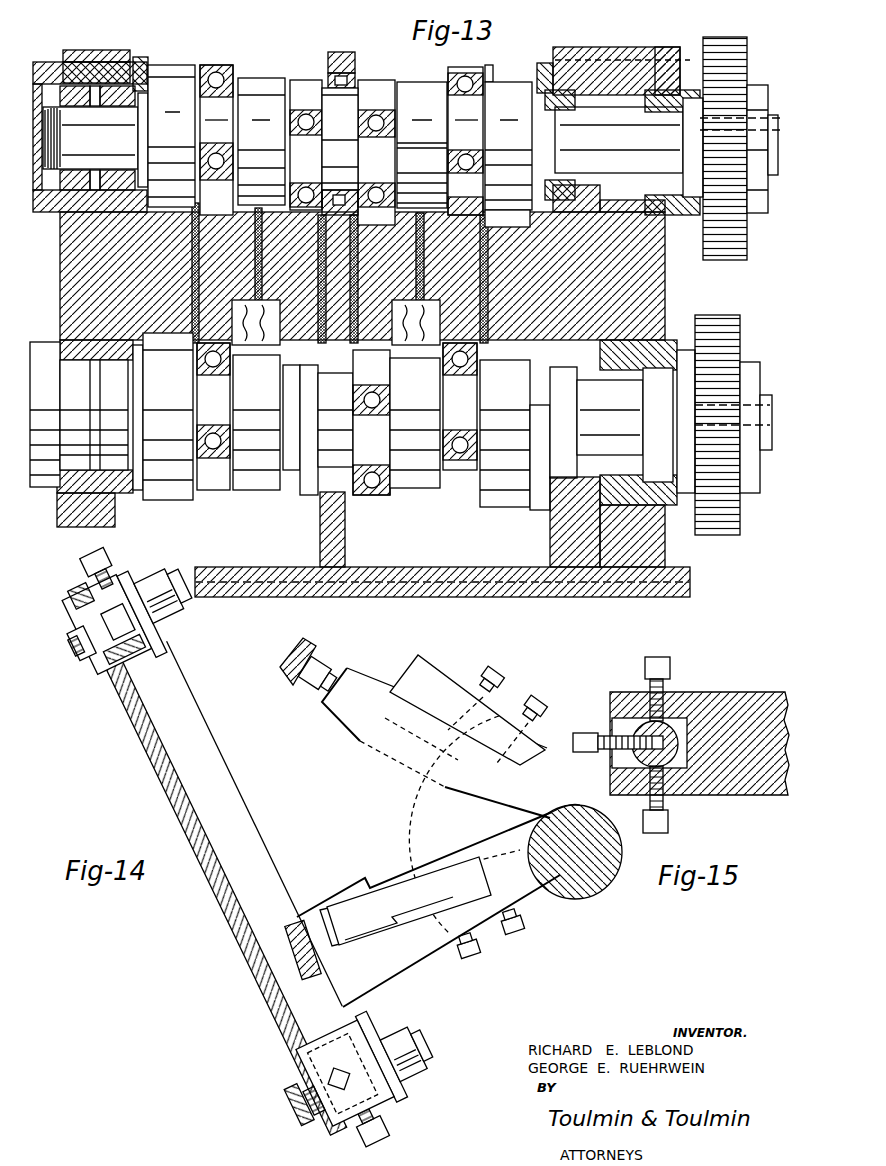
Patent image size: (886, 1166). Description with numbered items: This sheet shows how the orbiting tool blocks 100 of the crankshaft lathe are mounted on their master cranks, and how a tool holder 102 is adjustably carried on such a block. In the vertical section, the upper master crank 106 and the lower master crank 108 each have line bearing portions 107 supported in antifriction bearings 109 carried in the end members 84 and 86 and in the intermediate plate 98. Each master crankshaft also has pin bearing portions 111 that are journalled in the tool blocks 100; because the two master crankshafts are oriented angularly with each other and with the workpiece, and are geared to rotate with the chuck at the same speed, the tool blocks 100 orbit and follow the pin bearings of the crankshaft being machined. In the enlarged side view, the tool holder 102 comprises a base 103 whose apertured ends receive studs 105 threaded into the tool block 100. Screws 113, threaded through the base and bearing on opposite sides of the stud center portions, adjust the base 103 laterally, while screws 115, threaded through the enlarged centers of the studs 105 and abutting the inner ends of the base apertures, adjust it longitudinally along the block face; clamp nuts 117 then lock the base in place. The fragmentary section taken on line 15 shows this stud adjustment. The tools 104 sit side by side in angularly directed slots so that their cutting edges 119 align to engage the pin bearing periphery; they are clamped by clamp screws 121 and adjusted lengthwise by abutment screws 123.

In FIG. 13, the end member 84 is at (104, 57).
In FIG. 13, the end member 86 is at (664, 60).
In FIG. 13, the intermediate plate 98 is at (340, 62).
In FIG. 13, the tool block 100 is at (250, 348).
In FIG. 14, the tool block 100 is at (140, 742).
In FIG. 14, the tool holder 102 is at (262, 632).
In FIG. 14, the base 103 is at (187, 780).
In FIG. 15, the base 103 is at (757, 697).
In FIG. 14, the tool 104 is at (536, 786).
In FIG. 14, the stud 105 is at (96, 665).
In FIG. 15, the stud 105 is at (682, 710).
In FIG. 13, the master crank 106 is at (515, 71).
In FIG. 13, the line bearing portion 107 is at (122, 129).
In FIG. 13, the master crank 108 is at (490, 496).
In FIG. 13, the antifriction bearing 109 is at (138, 72).
In FIG. 13, the pin bearing portion 111 is at (222, 118).
In FIG. 14, the screw 113 is at (322, 1050).
In FIG. 15, the screw 113 is at (672, 658).
In FIG. 14, the screw 115 is at (107, 563).
In FIG. 15, the screw 115 is at (585, 734).
In FIG. 14, the clamp nut 117 is at (192, 619).
In FIG. 14, the cutting edge 119 is at (566, 818).
In FIG. 14, the clamp screw 121 is at (510, 690).
In FIG. 14, the abutment screw 123 is at (300, 690).
In FIG. 14, the section line 15 is at (81, 560).